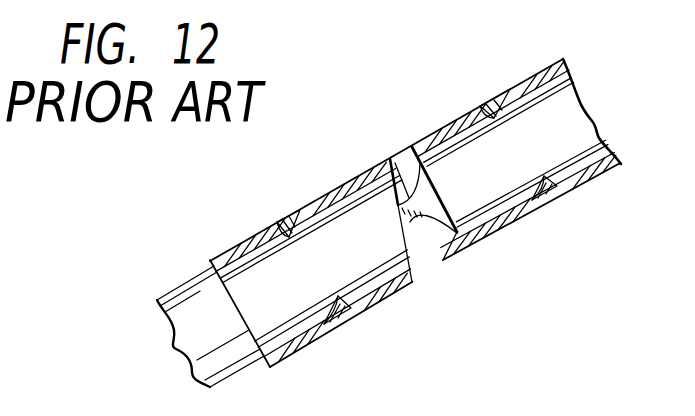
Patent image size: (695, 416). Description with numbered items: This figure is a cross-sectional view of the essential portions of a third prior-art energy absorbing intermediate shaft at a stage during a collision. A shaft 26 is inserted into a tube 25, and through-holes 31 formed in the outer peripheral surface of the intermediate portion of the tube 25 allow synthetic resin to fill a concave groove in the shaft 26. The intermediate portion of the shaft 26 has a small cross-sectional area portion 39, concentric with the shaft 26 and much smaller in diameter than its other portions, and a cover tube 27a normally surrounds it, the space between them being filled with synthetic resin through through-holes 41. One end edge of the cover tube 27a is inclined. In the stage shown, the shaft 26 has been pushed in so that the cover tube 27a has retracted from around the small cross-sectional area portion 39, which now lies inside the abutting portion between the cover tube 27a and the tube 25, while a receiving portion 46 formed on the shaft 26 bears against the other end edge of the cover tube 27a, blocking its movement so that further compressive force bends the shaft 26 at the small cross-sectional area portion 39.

The tube 25 is at (440, 118).
The shaft 26 is at (178, 276).
The cover tube 27a is at (318, 199).
The through-holes 31 is at (490, 98).
The small cross-sectional area portion 39 is at (419, 238).
The through-holes 41 is at (283, 222).
The receiving portion 46 is at (376, 213).